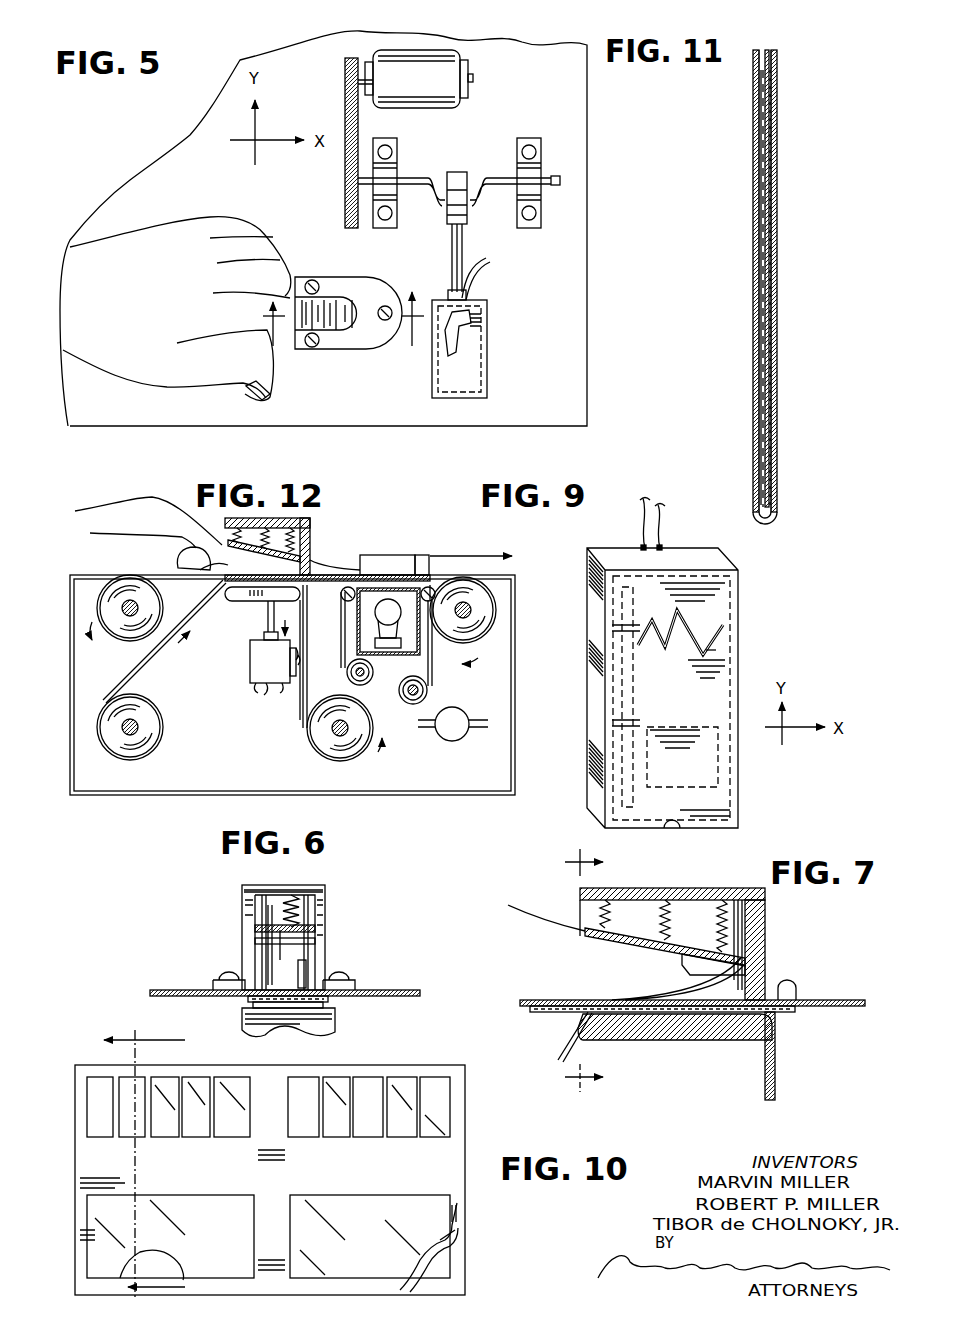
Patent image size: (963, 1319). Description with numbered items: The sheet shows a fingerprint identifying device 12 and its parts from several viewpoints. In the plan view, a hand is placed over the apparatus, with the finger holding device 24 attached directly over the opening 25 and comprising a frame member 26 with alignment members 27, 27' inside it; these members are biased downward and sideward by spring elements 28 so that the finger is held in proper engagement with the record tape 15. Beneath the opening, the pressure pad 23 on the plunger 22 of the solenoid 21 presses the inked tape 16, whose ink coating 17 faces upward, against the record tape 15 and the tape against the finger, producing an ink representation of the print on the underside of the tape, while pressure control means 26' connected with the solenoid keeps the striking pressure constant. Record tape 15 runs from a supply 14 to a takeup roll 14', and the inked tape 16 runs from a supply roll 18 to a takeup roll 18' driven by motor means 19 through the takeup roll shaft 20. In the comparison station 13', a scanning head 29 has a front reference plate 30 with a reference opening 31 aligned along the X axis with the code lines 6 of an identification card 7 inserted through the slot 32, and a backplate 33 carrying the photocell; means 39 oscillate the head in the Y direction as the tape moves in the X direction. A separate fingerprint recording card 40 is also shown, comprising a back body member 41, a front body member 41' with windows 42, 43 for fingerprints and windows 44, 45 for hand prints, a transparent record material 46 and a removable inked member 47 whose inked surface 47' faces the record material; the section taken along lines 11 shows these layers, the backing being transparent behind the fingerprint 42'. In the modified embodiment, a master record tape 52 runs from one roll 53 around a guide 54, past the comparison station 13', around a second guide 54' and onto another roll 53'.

In FIG. 5, the code lines 6 is at (480, 318).
In FIG. 9, the code lines 6 is at (715, 648).
In FIG. 5, the identification card 7 is at (476, 411).
In FIG. 9, the identification card 7 is at (667, 829).
In FIG. 10, the section lines 11– 11 is at (161, 1166).
In FIG. 12, the identifying device 12 is at (205, 793).
In FIG. 12, the comparison station 13' is at (391, 550).
In FIG. 12, the supply of record tape 14 is at (98, 599).
In FIG. 12, the takeup roll 14' is at (493, 620).
In FIG. 12, the record tape 15 is at (184, 579).
In FIG. 6, the record tape 15 is at (335, 1002).
In FIG. 7, the record tape 15 is at (789, 1013).
In FIG. 6, the inked tape 16 is at (246, 1003).
In FIG. 7, the inked tape 16 is at (777, 1074).
In FIG. 12, the ink coating 17 is at (134, 671).
In FIG. 12, the supply roll 18 is at (148, 727).
In FIG. 12, the takeup roll 18' is at (360, 737).
In FIG. 12, the motor means 19 is at (465, 732).
In FIG. 12, the takeup roll shaft 20 is at (318, 740).
In FIG. 12, the solenoid 21 is at (252, 673).
In FIG. 12, the plunger 22 is at (266, 630).
In FIG. 12, the impression pad 23 is at (230, 600).
In FIG. 6, the impression pad 23 is at (340, 1030).
In FIG. 7, the impression pad 23 is at (650, 1037).
In FIG. 12, the holding device 24 is at (311, 534).
In FIG. 7, the opening 25 is at (632, 1000).
In FIG. 5, the frame member 26 is at (348, 330).
In FIG. 6, the frame member 26 is at (296, 937).
In FIG. 7, the frame member 26 is at (700, 944).
In FIG. 12, the pressure control means 26' is at (313, 641).
In FIG. 7, the alignment member 27 is at (665, 933).
In FIG. 6, the alignment member 27' is at (252, 945).
In FIG. 6, the spring elements 28 is at (310, 970).
In FIG. 7, the spring elements 28 is at (672, 921).
In FIG. 5, the scanning head 29 is at (468, 371).
In FIG. 9, the front reference plate 30 is at (684, 701).
In FIG. 9, the reference opening 31 is at (722, 630).
In FIG. 9, the slot 32 is at (673, 830).
In FIG. 12, the backplate 33 is at (360, 565).
In FIG. 5, the oscillating means 39 is at (470, 147).
In FIG. 11, the fingerprint recording card 40 is at (771, 287).
In FIG. 11, the back body member 41 is at (805, 281).
In FIG. 10, the back body member 41 is at (293, 1165).
In FIG. 11, the front body member 41' is at (732, 281).
In FIG. 11, the windows 42 is at (727, 281).
In FIG. 10, the windows 42 is at (184, 1122).
In FIG. 10, the fingerprint 42' is at (80, 1082).
In FIG. 10, the windows 43 is at (330, 1136).
In FIG. 11, the window 44 is at (764, 326).
In FIG. 10, the window 44 is at (203, 1198).
In FIG. 10, the window 45 is at (393, 1201).
In FIG. 11, the record material 46 is at (763, 386).
In FIG. 12, the record material 46 is at (162, 655).
In FIG. 10, the record material 46 is at (442, 1226).
In FIG. 11, the inked member 47 is at (800, 278).
In FIG. 10, the inked member 47 is at (475, 1233).
In FIG. 11, the inked surface 47' is at (799, 287).
In FIG. 12, the master record tape 52 is at (456, 668).
In FIG. 12, the roll 53 is at (380, 636).
In FIG. 12, the roll 53' is at (435, 652).
In FIG. 12, the guide 54 is at (334, 593).
In FIG. 12, the guide 54' is at (463, 563).